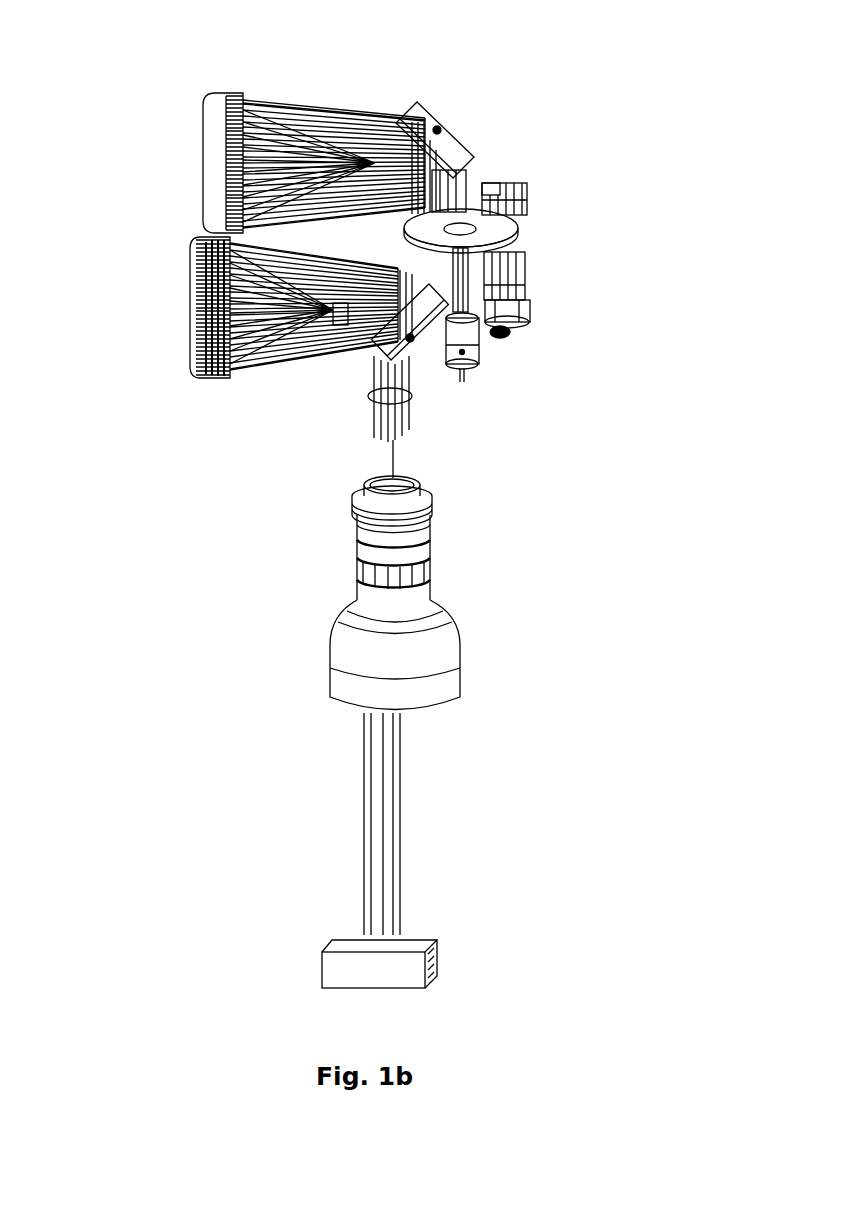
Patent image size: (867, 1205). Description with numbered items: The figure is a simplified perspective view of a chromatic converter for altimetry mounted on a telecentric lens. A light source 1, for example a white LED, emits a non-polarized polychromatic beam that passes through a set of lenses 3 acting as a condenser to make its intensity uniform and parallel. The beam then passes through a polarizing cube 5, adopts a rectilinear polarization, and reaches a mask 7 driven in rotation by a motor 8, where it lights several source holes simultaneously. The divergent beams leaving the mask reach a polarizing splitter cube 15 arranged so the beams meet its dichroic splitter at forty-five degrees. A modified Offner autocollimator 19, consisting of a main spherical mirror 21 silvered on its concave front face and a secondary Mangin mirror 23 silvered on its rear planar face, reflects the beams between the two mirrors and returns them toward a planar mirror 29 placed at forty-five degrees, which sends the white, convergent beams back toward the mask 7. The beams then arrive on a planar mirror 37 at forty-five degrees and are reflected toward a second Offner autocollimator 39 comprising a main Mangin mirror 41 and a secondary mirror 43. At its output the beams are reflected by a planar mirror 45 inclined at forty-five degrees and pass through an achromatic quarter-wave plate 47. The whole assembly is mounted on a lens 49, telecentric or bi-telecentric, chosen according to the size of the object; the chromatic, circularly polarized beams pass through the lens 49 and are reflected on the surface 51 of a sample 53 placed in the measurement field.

The light source 1 is at (512, 328).
The set of lenses 3 is at (522, 303).
The polarizing cube 5 is at (525, 262).
The mask 7 is at (520, 240).
The motor 8 is at (460, 338).
The polarizing splitter cube 15 is at (507, 184).
The modified Offner autocollimator 19 is at (192, 86).
The main spherical mirror 21 is at (222, 188).
The secondary mirror 23 is at (373, 177).
The planar mirror 29 is at (456, 143).
The planar mirror 37 is at (387, 333).
The second Offner autocollimator 39 is at (170, 272).
The main Mangin mirror 41 is at (190, 353).
The secondary mirror 43 is at (345, 322).
The planar mirror 45 is at (420, 353).
The achromatic quarter-wave plate 47 is at (373, 395).
The lens 49 is at (367, 660).
The surface 51 is at (363, 940).
The sample 53 is at (388, 967).